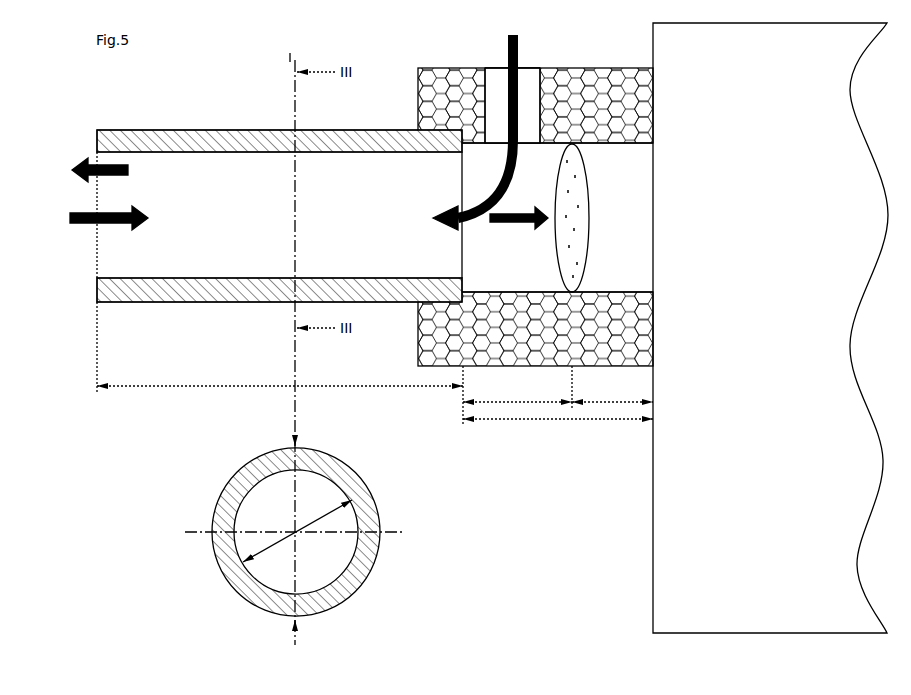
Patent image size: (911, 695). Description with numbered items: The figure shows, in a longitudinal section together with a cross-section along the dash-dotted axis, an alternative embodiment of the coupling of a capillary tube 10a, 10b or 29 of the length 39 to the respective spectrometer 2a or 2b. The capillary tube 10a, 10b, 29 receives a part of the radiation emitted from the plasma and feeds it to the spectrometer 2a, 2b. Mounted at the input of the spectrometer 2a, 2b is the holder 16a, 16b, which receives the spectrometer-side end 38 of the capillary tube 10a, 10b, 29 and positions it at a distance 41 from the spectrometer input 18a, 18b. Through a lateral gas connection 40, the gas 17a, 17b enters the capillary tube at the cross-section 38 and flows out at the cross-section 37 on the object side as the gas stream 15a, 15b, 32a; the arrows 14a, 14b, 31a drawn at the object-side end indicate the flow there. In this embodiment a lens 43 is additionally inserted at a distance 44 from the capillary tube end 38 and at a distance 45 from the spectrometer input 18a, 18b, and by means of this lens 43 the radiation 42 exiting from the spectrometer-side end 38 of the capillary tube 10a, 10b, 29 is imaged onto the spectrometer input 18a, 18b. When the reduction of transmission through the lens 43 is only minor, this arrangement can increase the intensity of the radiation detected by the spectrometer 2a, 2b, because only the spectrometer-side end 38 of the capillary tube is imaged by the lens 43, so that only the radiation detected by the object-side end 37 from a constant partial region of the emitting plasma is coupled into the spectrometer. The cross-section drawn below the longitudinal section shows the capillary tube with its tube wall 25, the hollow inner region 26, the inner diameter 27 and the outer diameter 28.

The spectrometer 2a is at (770, 328).
The spectrometer 2b is at (770, 328).
The spectrometer input 18a is at (770, 328).
The spectrometer input 18b is at (805, 23).
The holder 16a is at (535, 199).
The holder 16b is at (592, 68).
The lateral gas connection 40 is at (537, 70).
The capillary tube 10a is at (279, 204).
The capillary tube 10b is at (279, 204).
The capillary tube 29 is at (118, 130).
The object-side cross-section 37 is at (98, 247).
The gas stream 15a is at (174, 174).
The gas stream 15b is at (174, 174).
The gas stream 32a is at (128, 172).
The incoming flow 14a is at (173, 211).
The incoming flow 14b is at (173, 211).
The incoming flow 31a is at (130, 210).
The spectrometer-side end 38 is at (465, 260).
The gas 17a is at (451, 131).
The gas 17b is at (505, 47).
The radiation 42 is at (528, 208).
The lens 43 is at (578, 258).
The length 39 is at (280, 363).
The distance 44 is at (517, 387).
The distance 45 is at (612, 393).
The distance 41 is at (558, 410).
The tube wall 25 is at (316, 526).
The hollow inner region 26 is at (345, 455).
The inner diameter 27 is at (372, 520).
The outer diameter 28 is at (290, 637).